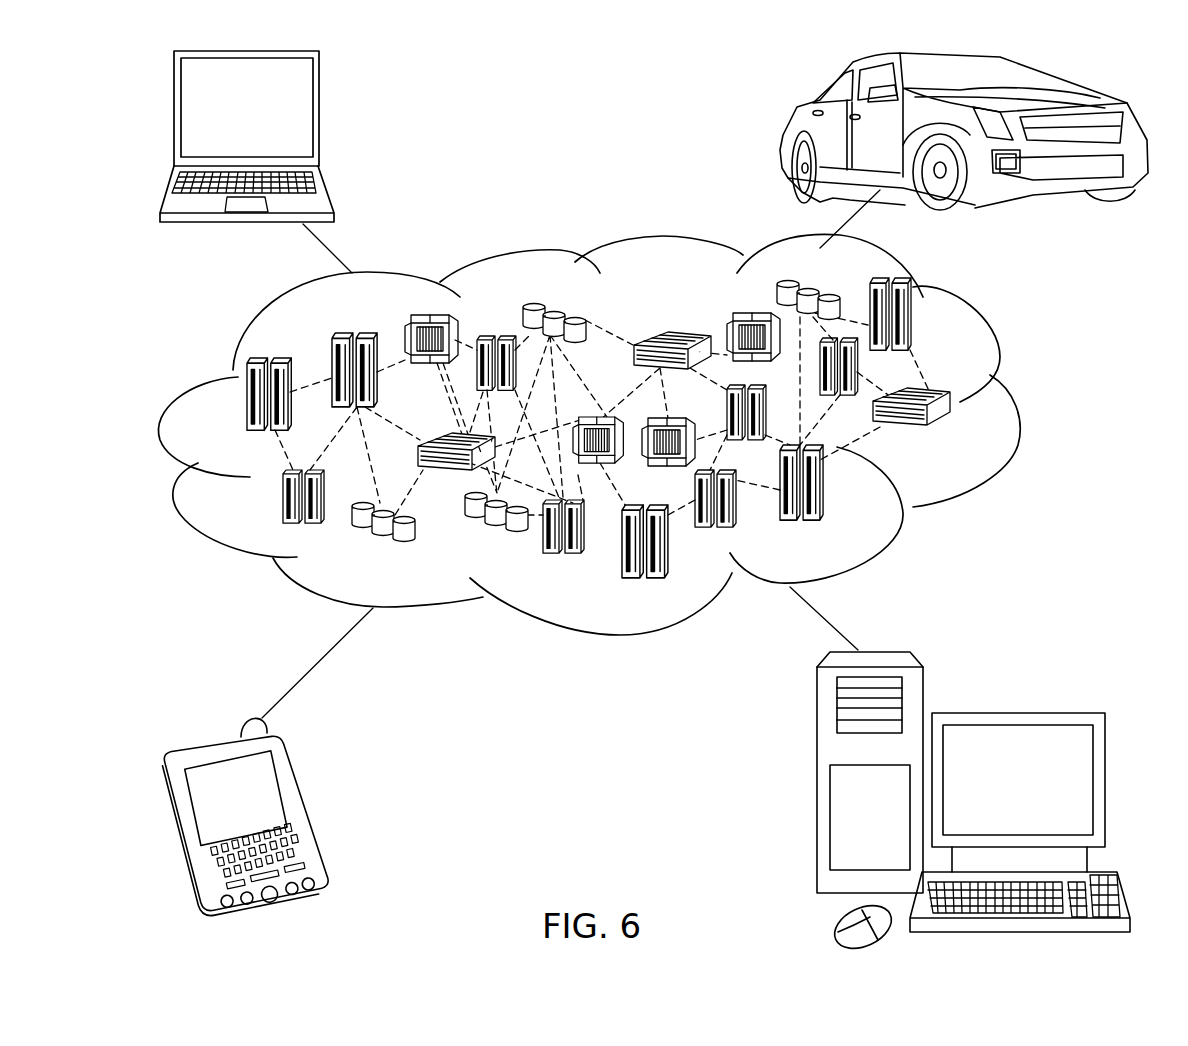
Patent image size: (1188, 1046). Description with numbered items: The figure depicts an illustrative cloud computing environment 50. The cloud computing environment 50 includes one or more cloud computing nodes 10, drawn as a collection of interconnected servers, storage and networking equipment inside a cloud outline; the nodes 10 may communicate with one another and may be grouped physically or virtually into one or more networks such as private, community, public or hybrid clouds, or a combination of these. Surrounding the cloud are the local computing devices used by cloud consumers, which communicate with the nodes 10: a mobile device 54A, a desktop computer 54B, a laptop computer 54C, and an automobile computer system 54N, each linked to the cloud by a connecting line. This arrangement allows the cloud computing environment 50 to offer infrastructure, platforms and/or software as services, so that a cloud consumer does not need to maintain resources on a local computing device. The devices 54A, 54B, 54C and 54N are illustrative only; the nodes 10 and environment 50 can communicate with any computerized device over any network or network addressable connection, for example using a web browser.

The cloud computing environment 50 is at (1017, 405).
The cloud computing nodes 10 is at (953, 437).
The mobile device 54A is at (305, 810).
The desktop computer 54B is at (1015, 713).
The laptop computer 54C is at (318, 116).
The automobile computer system 54N is at (782, 131).